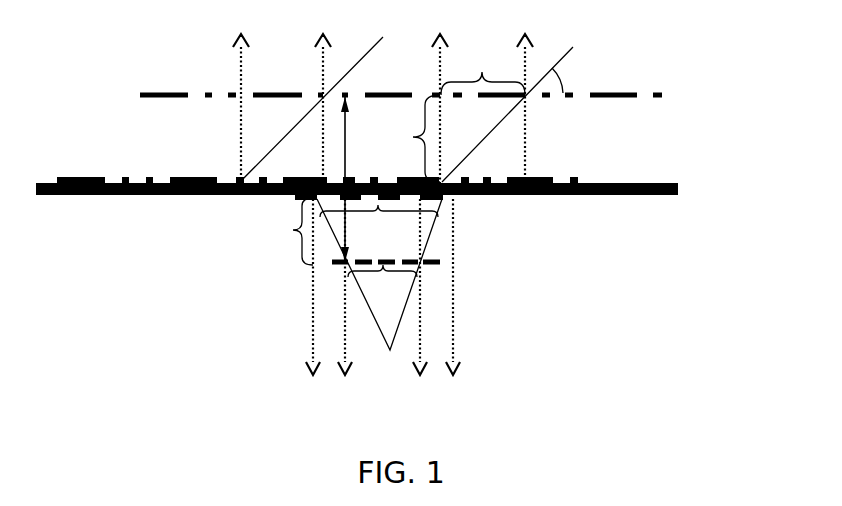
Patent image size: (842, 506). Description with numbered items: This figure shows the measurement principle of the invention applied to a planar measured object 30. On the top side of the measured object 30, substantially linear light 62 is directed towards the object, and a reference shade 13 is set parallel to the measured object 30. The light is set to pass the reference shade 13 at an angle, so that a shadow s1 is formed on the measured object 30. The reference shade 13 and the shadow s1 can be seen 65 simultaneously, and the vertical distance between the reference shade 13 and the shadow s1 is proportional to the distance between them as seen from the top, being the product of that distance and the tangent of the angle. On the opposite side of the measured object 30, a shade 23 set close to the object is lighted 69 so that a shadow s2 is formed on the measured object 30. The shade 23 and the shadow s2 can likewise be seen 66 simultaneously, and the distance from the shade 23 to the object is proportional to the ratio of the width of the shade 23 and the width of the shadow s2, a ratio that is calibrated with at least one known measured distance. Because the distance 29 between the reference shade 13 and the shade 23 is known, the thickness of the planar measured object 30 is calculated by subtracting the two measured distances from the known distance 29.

The reference shade 13 is at (163, 92).
The viewing of shade and shadow 65 is at (522, 50).
The substantially linear light 62 is at (568, 50).
The distance between the shades 29 is at (343, 174).
The measured object 30 is at (678, 187).
The shade 23 is at (438, 267).
The lighting of the shade 69 is at (390, 352).
The viewing of shade and shadow 66 is at (454, 352).
The shadow s1 is at (188, 177).
The shadow s2 is at (443, 198).